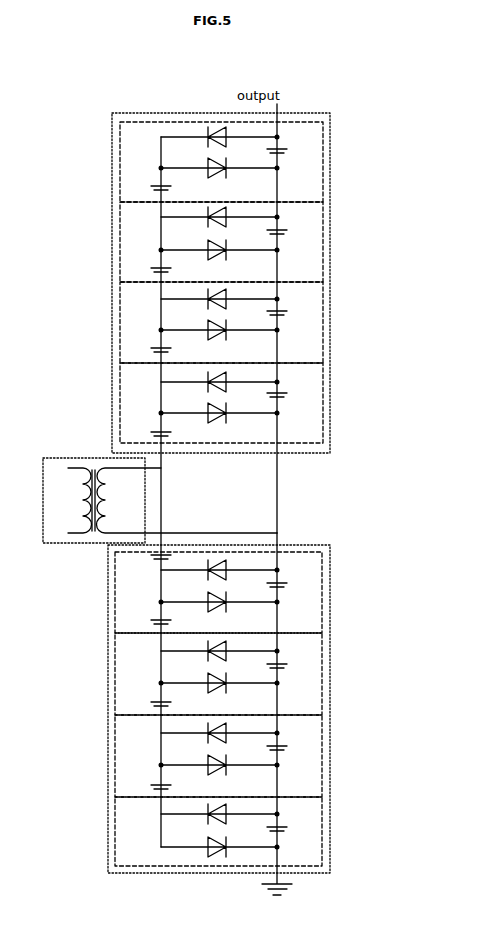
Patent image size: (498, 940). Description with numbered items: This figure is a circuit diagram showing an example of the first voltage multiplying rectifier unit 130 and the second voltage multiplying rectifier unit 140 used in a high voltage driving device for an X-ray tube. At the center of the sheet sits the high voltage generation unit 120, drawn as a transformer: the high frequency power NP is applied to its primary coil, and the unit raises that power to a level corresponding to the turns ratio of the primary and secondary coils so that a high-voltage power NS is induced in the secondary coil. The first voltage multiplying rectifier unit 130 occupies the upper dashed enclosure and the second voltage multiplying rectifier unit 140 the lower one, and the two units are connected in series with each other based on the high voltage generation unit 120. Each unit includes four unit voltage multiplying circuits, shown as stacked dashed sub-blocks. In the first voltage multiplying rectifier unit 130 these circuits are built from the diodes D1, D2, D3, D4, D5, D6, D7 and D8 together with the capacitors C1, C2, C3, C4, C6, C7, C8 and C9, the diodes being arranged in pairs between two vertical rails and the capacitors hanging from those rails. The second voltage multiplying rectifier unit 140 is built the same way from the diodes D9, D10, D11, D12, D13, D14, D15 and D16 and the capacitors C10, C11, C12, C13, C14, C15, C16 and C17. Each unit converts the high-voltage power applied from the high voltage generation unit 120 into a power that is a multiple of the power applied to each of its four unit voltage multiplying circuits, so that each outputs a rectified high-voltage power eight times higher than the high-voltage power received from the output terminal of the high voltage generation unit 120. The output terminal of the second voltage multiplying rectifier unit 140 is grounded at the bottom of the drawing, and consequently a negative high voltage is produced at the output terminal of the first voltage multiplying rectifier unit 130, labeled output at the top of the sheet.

The high voltage generation unit 120 is at (160, 483).
The first voltage multiplying rectifier unit 130 is at (331, 259).
The second voltage multiplying rectifier unit 140 is at (331, 730).
The high frequency power NP is at (72, 500).
The high-voltage power NS is at (187, 500).
The diode D1 is at (219, 139).
The diode D2 is at (219, 170).
The diode D3 is at (219, 219).
The diode D4 is at (219, 252).
The diode D5 is at (219, 301).
The diode D6 is at (219, 332).
The diode D7 is at (219, 384).
The diode D8 is at (219, 415).
The diode D9 is at (219, 572).
The diode D10 is at (219, 604).
The diode D11 is at (219, 653).
The diode D12 is at (219, 685).
The diode D13 is at (219, 735).
The diode D14 is at (219, 767).
The diode D15 is at (219, 816).
The diode D16 is at (219, 849).
The capacitor C1 is at (283, 148).
The capacitor C2 is at (154, 181).
The capacitor C3 is at (283, 228).
The capacitor C4 is at (154, 263).
The capacitor C6 is at (283, 309).
The capacitor C7 is at (154, 343).
The capacitor C8 is at (283, 391).
The capacitor C9 is at (154, 427).
The capacitor C10 is at (146, 561).
The capacitor C11 is at (287, 581).
The capacitor C12 is at (149, 615).
The capacitor C13 is at (287, 662).
The capacitor C14 is at (149, 697).
The capacitor C15 is at (287, 744).
The capacitor C16 is at (149, 780).
The capacitor C17 is at (287, 825).